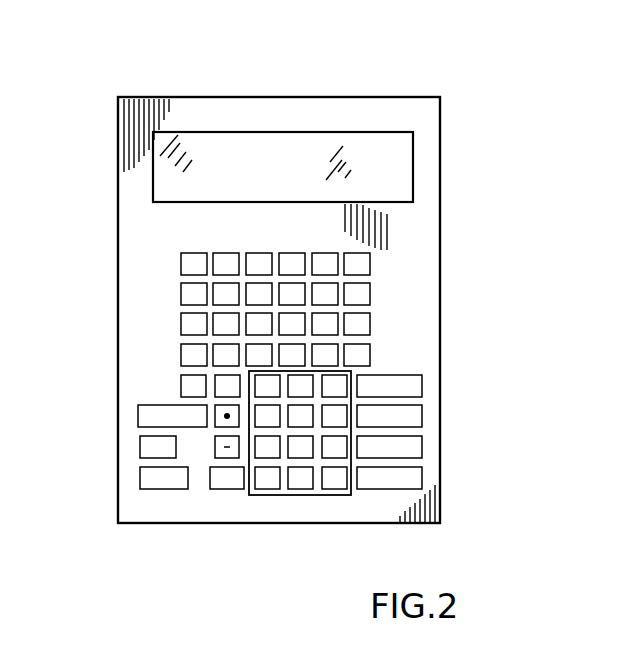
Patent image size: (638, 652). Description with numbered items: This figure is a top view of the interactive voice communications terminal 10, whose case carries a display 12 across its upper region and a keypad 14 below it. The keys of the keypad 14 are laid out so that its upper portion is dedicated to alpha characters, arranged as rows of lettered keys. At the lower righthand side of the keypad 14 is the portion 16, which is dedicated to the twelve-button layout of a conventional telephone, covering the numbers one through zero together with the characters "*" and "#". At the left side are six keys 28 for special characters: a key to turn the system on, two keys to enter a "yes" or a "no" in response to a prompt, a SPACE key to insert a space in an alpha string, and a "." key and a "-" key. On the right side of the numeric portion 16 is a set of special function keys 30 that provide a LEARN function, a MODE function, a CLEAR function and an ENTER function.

The interactive voice communications terminal 10 is at (118, 212).
The display 12 is at (313, 132).
The keypad 14 is at (368, 289).
The numeric portion of the keypad 16 is at (268, 495).
The six special character keys 28 is at (115, 495).
The special function keys 30 is at (445, 488).